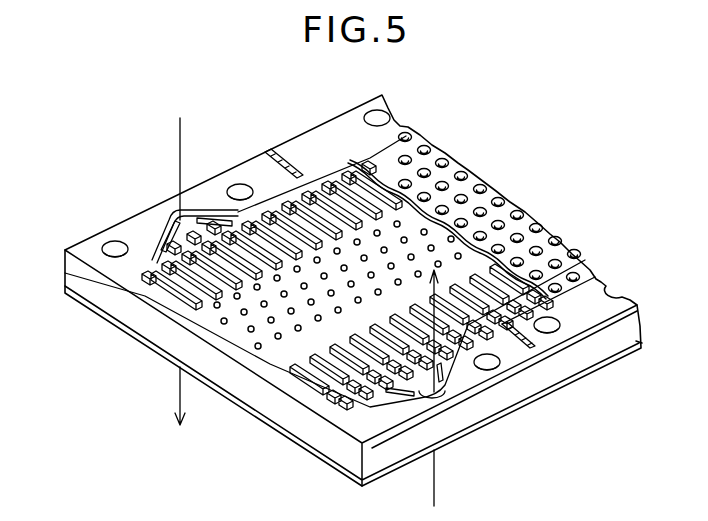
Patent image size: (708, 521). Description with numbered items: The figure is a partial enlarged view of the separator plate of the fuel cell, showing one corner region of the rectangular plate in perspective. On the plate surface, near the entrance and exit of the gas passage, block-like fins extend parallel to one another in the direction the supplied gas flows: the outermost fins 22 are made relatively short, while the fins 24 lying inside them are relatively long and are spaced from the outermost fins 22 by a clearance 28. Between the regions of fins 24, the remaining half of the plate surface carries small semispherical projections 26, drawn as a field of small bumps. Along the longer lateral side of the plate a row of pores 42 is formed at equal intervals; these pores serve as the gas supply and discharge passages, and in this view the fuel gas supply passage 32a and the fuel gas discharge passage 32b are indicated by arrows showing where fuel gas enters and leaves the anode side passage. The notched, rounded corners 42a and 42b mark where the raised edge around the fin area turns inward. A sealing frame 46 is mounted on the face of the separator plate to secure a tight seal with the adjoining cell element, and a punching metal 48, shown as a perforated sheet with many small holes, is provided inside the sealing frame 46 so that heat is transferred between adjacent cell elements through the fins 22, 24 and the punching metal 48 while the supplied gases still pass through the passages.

The outermost fins 22 is at (150, 262).
The fins 24 is at (173, 303).
The small semispherical projections 26 is at (258, 349).
The clearance 28 is at (145, 283).
The fuel gas supply passage 32a is at (436, 492).
The fuel gas discharge passage 32b is at (180, 386).
The pores 42 is at (115, 249).
The rounded notch corner 42a is at (438, 400).
The rounded notch corner 42b is at (170, 215).
The sealing frame 46 is at (333, 463).
The punching metal 48 is at (456, 163).